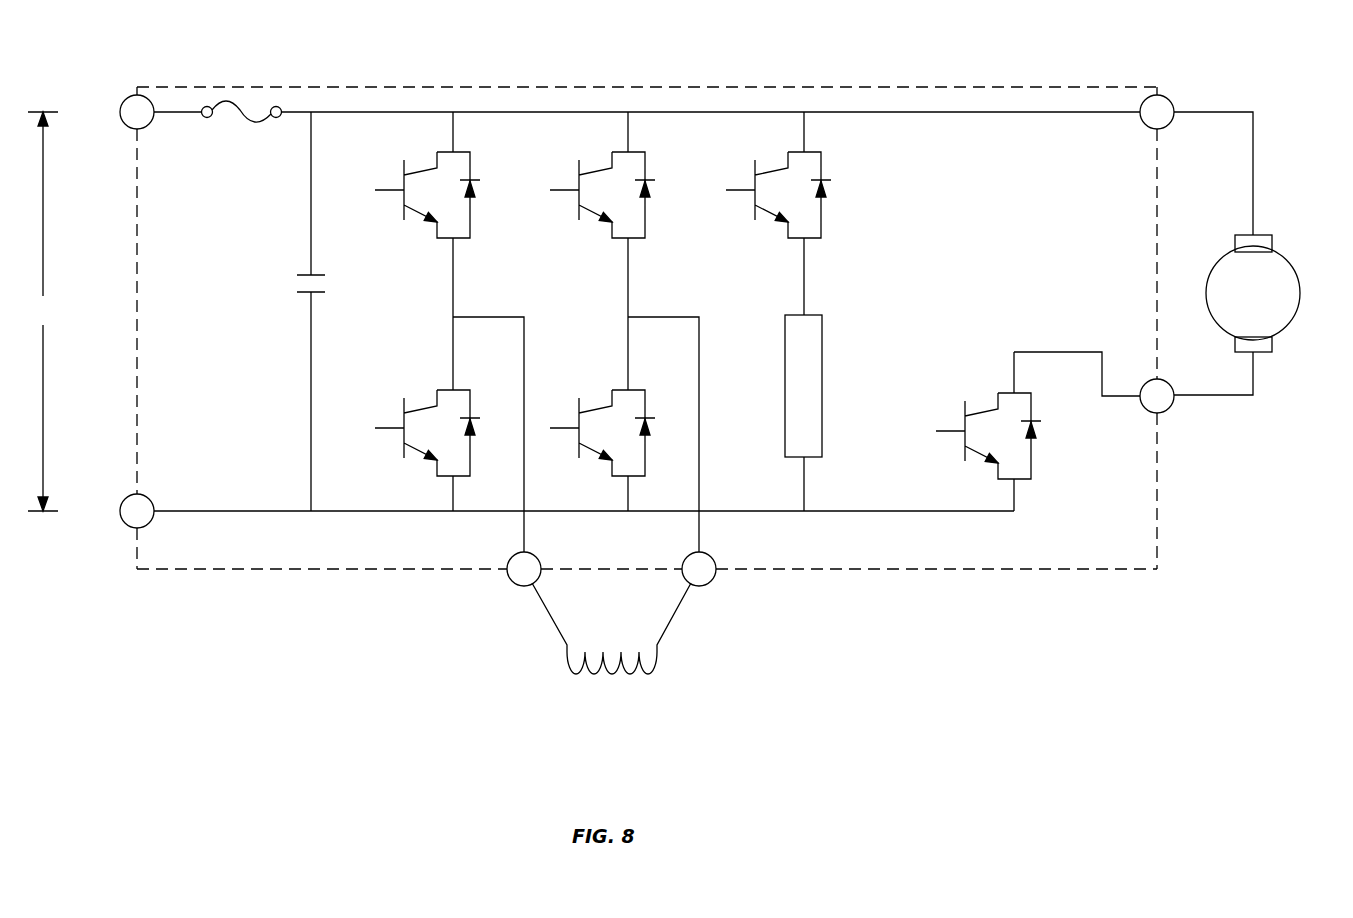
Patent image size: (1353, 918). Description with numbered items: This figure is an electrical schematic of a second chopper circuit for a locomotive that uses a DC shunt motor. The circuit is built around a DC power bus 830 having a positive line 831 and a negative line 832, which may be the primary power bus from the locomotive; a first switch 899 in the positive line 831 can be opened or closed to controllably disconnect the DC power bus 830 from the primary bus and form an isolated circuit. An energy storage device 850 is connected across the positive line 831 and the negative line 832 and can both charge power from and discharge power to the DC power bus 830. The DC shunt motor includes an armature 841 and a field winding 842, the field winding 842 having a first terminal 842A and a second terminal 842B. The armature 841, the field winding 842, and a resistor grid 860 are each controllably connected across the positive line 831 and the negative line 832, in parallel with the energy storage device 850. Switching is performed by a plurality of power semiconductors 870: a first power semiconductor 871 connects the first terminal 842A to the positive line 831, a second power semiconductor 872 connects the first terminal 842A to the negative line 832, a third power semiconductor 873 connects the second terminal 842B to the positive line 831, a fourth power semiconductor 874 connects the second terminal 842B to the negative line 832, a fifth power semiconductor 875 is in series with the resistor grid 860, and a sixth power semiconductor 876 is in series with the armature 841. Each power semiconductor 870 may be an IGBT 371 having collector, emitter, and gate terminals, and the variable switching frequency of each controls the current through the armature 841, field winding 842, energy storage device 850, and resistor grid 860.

The DC power bus 830 is at (46, 311).
The positive line 831 is at (120, 113).
The negative line 832 is at (120, 513).
The first switch 899 is at (228, 100).
The energy storage device 850 is at (303, 275).
The first power semiconductor 871 is at (450, 214).
The second power semiconductor 872 is at (450, 414).
The third power semiconductor 873 is at (625, 214).
The fourth power semiconductor 874 is at (625, 414).
The fifth power semiconductor 875 is at (801, 213).
The sixth power semiconductor 876 is at (1038, 431).
The IGBT 371 is at (757, 311).
The resistor grid 860 is at (823, 386).
The armature 841 is at (1237, 304).
The field winding 842 is at (612, 675).
The first terminal 842A is at (512, 582).
The second terminal 842B is at (710, 582).
The plurality of power semiconductors 870 is at (1160, 577).